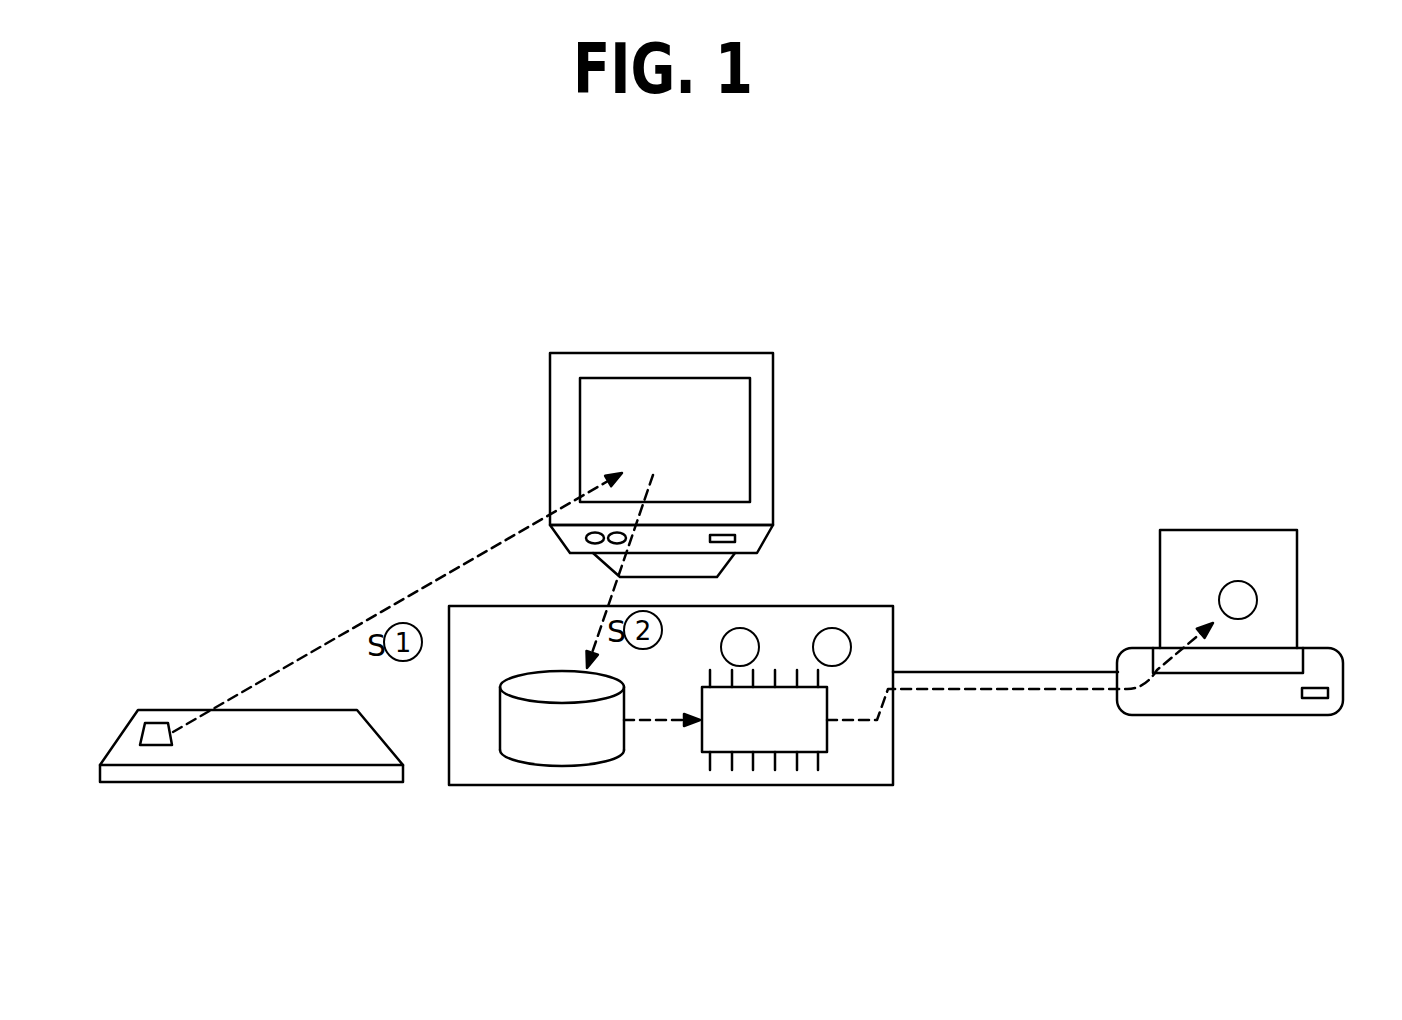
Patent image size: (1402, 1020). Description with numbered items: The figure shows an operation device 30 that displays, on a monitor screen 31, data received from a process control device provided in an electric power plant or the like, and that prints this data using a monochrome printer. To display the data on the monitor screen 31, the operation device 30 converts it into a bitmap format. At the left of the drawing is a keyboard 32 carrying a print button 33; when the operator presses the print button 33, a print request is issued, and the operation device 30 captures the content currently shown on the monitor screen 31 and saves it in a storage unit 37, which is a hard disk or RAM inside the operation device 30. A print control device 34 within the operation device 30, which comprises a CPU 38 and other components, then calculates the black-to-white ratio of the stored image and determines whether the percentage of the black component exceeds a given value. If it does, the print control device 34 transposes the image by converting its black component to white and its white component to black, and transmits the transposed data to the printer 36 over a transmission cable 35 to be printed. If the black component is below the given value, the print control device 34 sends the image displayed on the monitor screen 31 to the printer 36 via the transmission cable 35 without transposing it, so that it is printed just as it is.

The operation device 30 is at (725, 420).
The monitor screen 31 is at (623, 407).
The keyboard 32 is at (248, 718).
The print button 33 is at (150, 745).
The print control device 34 is at (665, 673).
The transmission cable 35 is at (933, 672).
The printer 36 is at (1324, 497).
The storage unit 37 is at (530, 763).
The CPU 38 is at (767, 753).